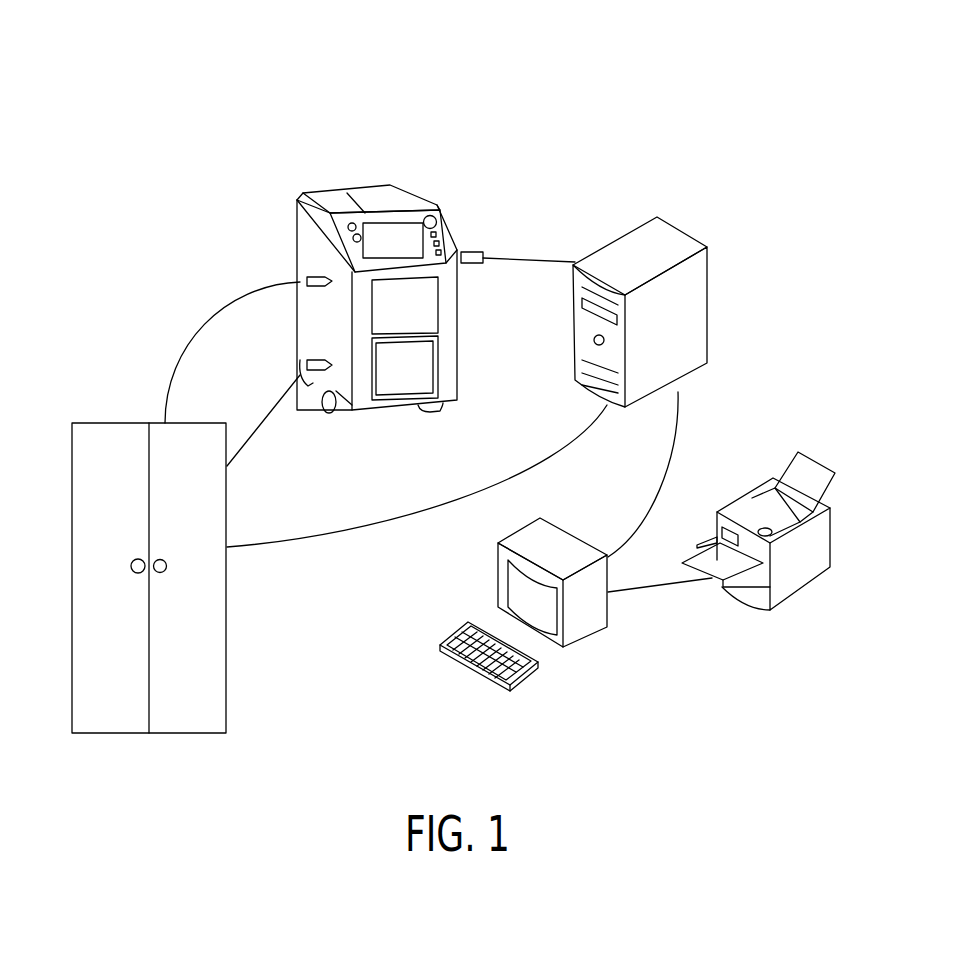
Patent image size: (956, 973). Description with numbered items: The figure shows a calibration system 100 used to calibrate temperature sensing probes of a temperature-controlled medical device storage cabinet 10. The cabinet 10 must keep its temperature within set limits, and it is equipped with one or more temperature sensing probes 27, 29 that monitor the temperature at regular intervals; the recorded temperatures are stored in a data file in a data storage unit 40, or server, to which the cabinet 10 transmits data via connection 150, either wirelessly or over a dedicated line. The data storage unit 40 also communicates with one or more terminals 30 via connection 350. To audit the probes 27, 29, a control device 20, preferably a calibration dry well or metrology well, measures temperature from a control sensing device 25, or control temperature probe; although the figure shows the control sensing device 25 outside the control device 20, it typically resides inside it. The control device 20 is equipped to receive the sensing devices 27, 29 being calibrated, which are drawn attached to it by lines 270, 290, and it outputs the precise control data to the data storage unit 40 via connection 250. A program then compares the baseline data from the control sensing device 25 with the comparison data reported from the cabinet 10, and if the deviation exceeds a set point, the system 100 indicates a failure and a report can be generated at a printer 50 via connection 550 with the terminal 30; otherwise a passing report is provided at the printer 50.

The calibration system 100 is at (226, 99).
The temperature controlled cabinet 10 is at (180, 757).
The control device 20 is at (327, 187).
The control sensing device 25 is at (471, 249).
The temperature sensing probe 27 is at (302, 364).
The temperature sensing probe 29 is at (303, 280).
The terminal 30 is at (593, 635).
The data storage unit 40 is at (628, 227).
The printer 50 is at (805, 594).
The connection 150 is at (417, 476).
The connection 250 is at (529, 244).
The connection line 270 is at (263, 420).
The connection line 290 is at (226, 352).
The connection 350 is at (643, 474).
The connection 550 is at (660, 598).